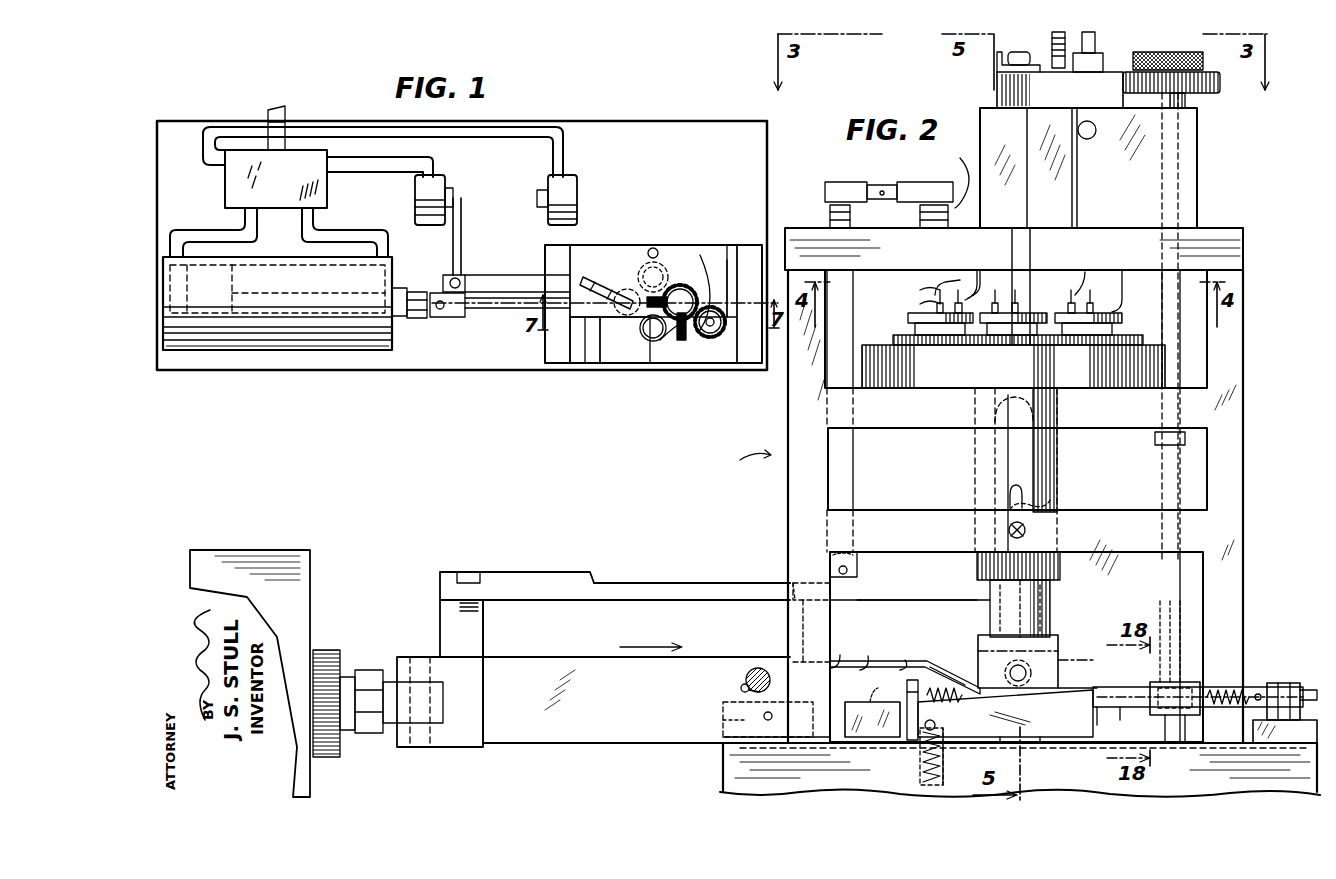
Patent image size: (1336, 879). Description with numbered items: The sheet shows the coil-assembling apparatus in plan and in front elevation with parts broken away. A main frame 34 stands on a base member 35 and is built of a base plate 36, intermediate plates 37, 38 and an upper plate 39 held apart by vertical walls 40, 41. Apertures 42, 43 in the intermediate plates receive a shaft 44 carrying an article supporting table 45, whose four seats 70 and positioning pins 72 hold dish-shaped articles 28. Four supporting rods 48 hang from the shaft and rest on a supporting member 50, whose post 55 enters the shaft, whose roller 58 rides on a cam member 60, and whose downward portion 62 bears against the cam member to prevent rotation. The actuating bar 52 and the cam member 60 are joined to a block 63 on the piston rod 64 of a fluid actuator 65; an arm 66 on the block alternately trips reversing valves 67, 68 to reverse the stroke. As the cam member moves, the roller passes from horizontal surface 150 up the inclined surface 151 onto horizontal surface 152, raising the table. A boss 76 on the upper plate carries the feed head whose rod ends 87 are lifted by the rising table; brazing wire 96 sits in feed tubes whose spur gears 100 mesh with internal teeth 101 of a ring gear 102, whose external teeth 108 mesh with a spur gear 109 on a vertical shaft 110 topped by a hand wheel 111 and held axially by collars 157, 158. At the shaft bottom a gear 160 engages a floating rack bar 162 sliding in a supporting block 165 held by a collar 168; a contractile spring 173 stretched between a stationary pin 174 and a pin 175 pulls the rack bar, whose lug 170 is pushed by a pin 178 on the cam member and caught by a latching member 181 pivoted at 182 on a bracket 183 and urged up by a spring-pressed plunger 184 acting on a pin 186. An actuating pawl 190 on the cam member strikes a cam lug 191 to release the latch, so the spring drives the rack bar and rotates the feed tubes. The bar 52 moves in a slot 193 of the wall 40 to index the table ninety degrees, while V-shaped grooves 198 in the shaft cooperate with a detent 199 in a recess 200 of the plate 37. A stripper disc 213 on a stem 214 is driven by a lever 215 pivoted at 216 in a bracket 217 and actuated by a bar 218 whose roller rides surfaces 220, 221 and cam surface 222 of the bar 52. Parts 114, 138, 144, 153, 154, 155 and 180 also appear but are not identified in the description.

In FIG. 2, the dish-shaped article 28 is at (900, 328).
In FIG. 1, the main frame 34 is at (556, 364).
In FIG. 2, the main frame 34 is at (752, 460).
In FIG. 1, the base member 35 is at (433, 370).
In FIG. 2, the base member 35 is at (722, 794).
In FIG. 2, the base plate 36 is at (728, 768).
In FIG. 2, the intermediate plate 37 is at (1122, 548).
In FIG. 2, the intermediate plate 38 is at (1112, 428).
In FIG. 1, the upper plate 39 is at (631, 245).
In FIG. 2, the upper plate 39 is at (1212, 234).
In FIG. 1, the vertical plate or wall 40 is at (604, 364).
In FIG. 2, the vertical plate or wall 40 is at (790, 483).
In FIG. 1, the vertical plate or wall 41 is at (748, 364).
In FIG. 2, the vertical plate or wall 41 is at (1243, 493).
In FIG. 2, the aperture 42 is at (975, 438).
In FIG. 2, the aperture 43 is at (975, 502).
In FIG. 2, the shaft 44 is at (975, 471).
In FIG. 1, the article supporting table 45 is at (615, 342).
In FIG. 2, the article supporting table 45 is at (907, 388).
In FIG. 2, the supporting rods or pins 48 is at (1045, 612).
In FIG. 2, the supporting member 50 is at (978, 645).
In FIG. 1, the actuating member or bar 52 is at (483, 276).
In FIG. 2, the actuating member or bar 52 is at (535, 575).
In FIG. 2, the cylindrical rod or shaft 55 is at (1040, 605).
In FIG. 2, the roller 58 is at (1025, 672).
In FIG. 1, the actuating cam member or bar 60 is at (490, 308).
In FIG. 2, the actuating cam member or bar 60 is at (572, 660).
In FIG. 2, the portion of supporting member 62 is at (1030, 742).
In FIG. 1, the block 63 is at (446, 317).
In FIG. 2, the block 63 is at (440, 658).
In FIG. 1, the piston rod 64 is at (416, 292).
In FIG. 2, the piston rod 64 is at (360, 670).
In FIG. 2, the fluid operated actuator 65 is at (270, 550).
In FIG. 1, the arm 66 is at (462, 233).
In FIG. 1, the reversing valve 67 is at (415, 186).
In FIG. 1, the reversing valve 68 is at (226, 188).
In FIG. 1, the positioning member or seat 70 is at (650, 341).
In FIG. 2, the positioning member or seat 70 is at (965, 336).
In FIG. 2, the positioning pin 72 is at (961, 274).
In FIG. 2, the boss 76 is at (1198, 172).
In FIG. 2, the enlarged end 87 is at (1030, 272).
In FIG. 2, the brazing wire 96 is at (1096, 40).
In FIG. 1, the spur gear 100 is at (684, 286).
In FIG. 2, the spur gear 100 is at (1052, 50).
In FIG. 1, the internal teeth 101 is at (700, 255).
In FIG. 1, the ring gear 102 is at (658, 250).
In FIG. 1, the external teeth 108 is at (676, 342).
In FIG. 1, the spur gear 109 is at (712, 338).
In FIG. 2, the spur gear 109 is at (1220, 82).
In FIG. 1, the vertical shaft 110 is at (733, 260).
In FIG. 2, the vertical shaft 110 is at (1165, 469).
In FIG. 2, the hand wheel 111 is at (1168, 52).
In FIG. 2, the cap 114 is at (1052, 70).
In FIG. 2, the wire 138 is at (1125, 272).
In FIG. 2, the opening 144 is at (1088, 140).
In FIG. 2, the horizontal surface 150 is at (1060, 690).
In FIG. 2, the inclined surface 151 is at (940, 662).
In FIG. 2, the horizontal surface 152 is at (912, 660).
In FIG. 2, the spring 153 is at (875, 660).
In FIG. 2, the spring 154 is at (845, 655).
In FIG. 2, the bracket 155 is at (803, 655).
In FIG. 2, the collar 157 is at (1186, 100).
In FIG. 2, the collar 158 is at (1185, 440).
In FIG. 2, the gear 160 is at (1200, 672).
In FIG. 2, the floating rack bar 162 is at (1137, 681).
In FIG. 2, the supporting member or block 165 is at (1226, 688).
In FIG. 2, the collar 168 is at (1205, 740).
In FIG. 2, the triangular lug 170 is at (1108, 708).
In FIG. 2, the contractile spring 173 is at (955, 688).
In FIG. 2, the stationary pin 174 is at (905, 742).
In FIG. 2, the pin 175 is at (1270, 683).
In FIG. 2, the pin 178 is at (890, 695).
In FIG. 2, the stud 180 is at (1300, 688).
In FIG. 2, the latching member 181 is at (1062, 740).
In FIG. 2, the pivot 182 is at (762, 716).
In FIG. 2, the bracket 183 is at (740, 736).
In FIG. 2, the spring-pressed plunger 184 is at (944, 766).
In FIG. 2, the pin 186 is at (944, 742).
In FIG. 2, the actuating pawl 190 is at (748, 686).
In FIG. 2, the cam lug 191 is at (858, 702).
In FIG. 2, the slot 193 is at (787, 578).
In FIG. 2, the V-shaped groove 198 is at (1020, 495).
In FIG. 2, the spring-pressed detent 199 is at (1035, 510).
In FIG. 2, the recess 200 is at (1025, 531).
In FIG. 2, the stripper disc 213 is at (935, 280).
In FIG. 2, the stem 214 is at (966, 175).
In FIG. 1, the lever 215 is at (598, 282).
In FIG. 2, the lever 215 is at (927, 195).
In FIG. 2, the pivot 216 is at (884, 190).
In FIG. 2, the bracket 217 is at (846, 194).
In FIG. 2, the bar 218 is at (858, 468).
In FIG. 2, the horizontal surface 220 is at (660, 583).
In FIG. 2, the horizontal surface 221 is at (938, 573).
In FIG. 2, the inclined cam surface 222 is at (793, 586).